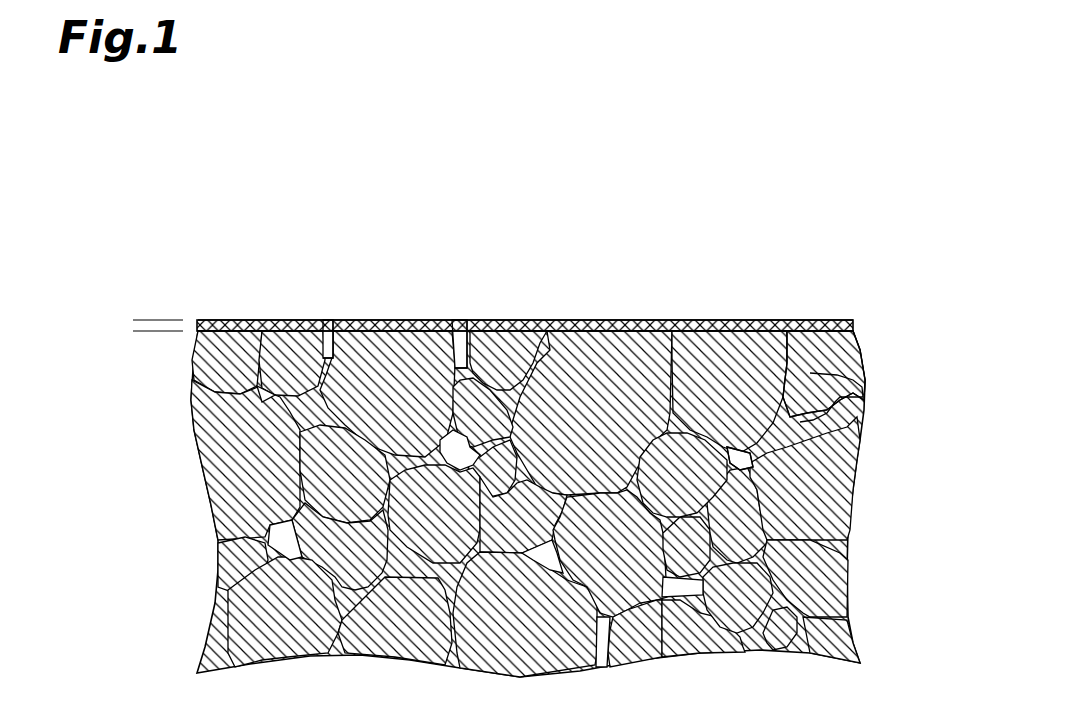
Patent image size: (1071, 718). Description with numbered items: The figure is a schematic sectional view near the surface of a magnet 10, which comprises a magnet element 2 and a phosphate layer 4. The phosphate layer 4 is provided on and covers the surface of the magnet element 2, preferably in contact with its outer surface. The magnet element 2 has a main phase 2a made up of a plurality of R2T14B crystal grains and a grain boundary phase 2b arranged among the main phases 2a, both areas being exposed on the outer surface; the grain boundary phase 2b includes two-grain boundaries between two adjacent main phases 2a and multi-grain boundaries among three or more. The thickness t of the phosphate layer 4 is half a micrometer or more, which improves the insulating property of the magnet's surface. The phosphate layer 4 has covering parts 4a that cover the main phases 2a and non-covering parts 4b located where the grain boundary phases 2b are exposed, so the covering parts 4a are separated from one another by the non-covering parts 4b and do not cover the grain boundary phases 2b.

The magnet 10 is at (799, 279).
The magnet element 2 is at (945, 427).
The main phase 2a is at (733, 417).
The grain boundary phase 2b is at (683, 588).
The phosphate layer 4 is at (480, 237).
The covering parts 4a is at (510, 322).
The non-covering parts 4b is at (332, 322).
The thickness of the phosphate layer t is at (152, 373).